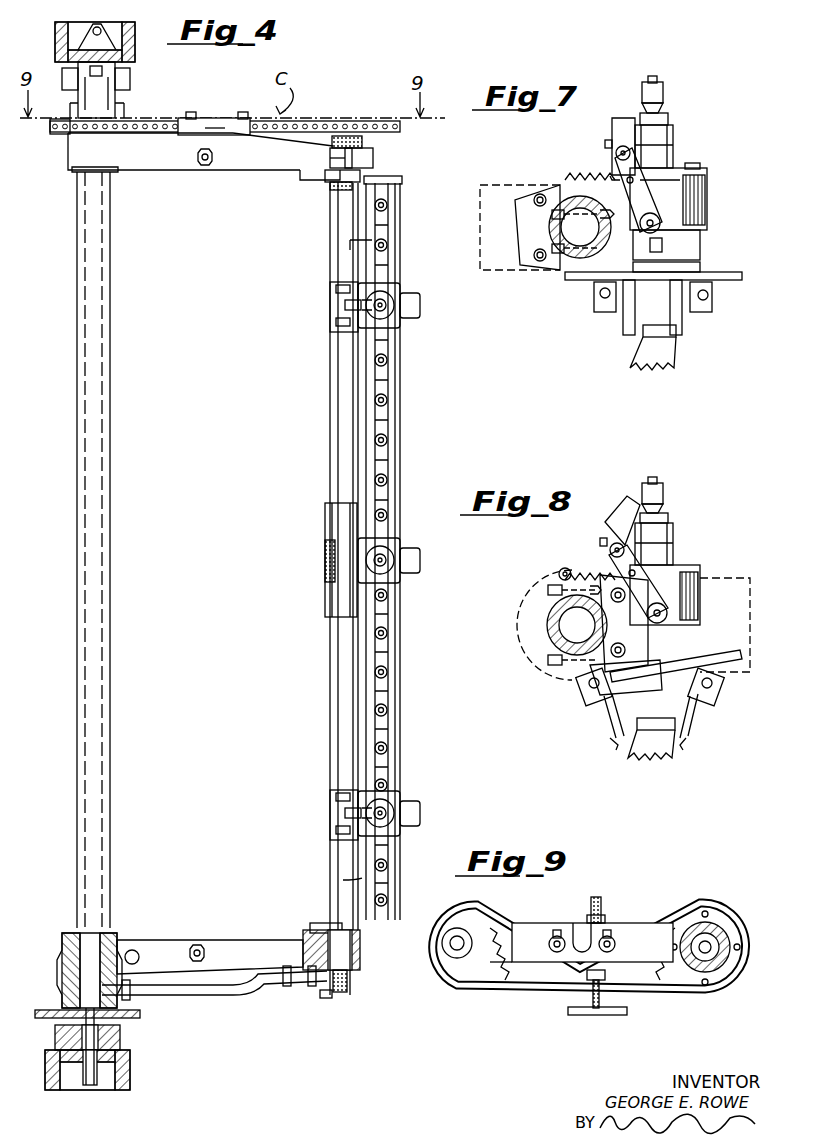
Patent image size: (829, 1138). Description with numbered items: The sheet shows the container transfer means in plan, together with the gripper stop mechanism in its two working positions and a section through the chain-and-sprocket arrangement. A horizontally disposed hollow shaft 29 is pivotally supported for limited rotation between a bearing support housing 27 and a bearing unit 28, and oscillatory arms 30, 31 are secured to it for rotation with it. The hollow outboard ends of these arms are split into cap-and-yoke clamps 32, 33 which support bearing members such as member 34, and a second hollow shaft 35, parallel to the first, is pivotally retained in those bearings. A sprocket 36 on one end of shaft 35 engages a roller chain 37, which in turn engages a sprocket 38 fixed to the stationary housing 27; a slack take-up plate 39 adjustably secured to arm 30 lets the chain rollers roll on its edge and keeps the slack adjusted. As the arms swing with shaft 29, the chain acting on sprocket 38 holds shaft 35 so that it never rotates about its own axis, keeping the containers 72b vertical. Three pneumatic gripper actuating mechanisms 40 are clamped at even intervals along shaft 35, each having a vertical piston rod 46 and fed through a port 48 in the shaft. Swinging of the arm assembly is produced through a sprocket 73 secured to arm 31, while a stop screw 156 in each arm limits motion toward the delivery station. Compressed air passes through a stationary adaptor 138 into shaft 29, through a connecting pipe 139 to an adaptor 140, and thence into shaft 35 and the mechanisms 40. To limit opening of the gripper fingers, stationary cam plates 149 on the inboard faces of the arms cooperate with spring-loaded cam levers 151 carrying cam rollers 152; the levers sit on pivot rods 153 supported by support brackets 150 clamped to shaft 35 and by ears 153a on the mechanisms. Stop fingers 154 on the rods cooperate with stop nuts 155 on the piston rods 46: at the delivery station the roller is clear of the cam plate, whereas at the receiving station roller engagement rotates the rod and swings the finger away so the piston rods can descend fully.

In FIG. 4, the bearing support housing 27 is at (120, 100).
In FIG. 4, the bearing unit 28 is at (120, 1038).
In FIG. 4, the horizontally disposed shaft 29 is at (95, 891).
In FIG. 4, the oscillatory arm 30 is at (148, 172).
In FIG. 4, the oscillatory arm 31 is at (166, 930).
In FIG. 4, the cap-and-yoke clamp 32 is at (374, 160).
In FIG. 4, the cap-and-yoke clamp 33 is at (360, 958).
In FIG. 4, the bearing member 34 is at (355, 975).
In FIG. 4, the second hollow shaft 35 is at (340, 723).
In FIG. 7, the second hollow shaft 35 is at (572, 260).
In FIG. 8, the second hollow shaft 35 is at (560, 650).
In FIG. 4, the sprocket 36 is at (362, 138).
In FIG. 9, the sprocket 36 is at (455, 975).
In FIG. 4, the roller chain 37 is at (335, 112).
In FIG. 9, the roller chain 37 is at (670, 992).
In FIG. 4, the sprocket 38 is at (58, 126).
In FIG. 9, the sprocket 38 is at (716, 914).
In FIG. 4, the slack take-up plate 39 is at (220, 120).
In FIG. 9, the slack take-up plate 39 is at (614, 925).
In FIG. 4, the pneumatic gripper actuating mechanism 40 is at (400, 295).
In FIG. 7, the pneumatic gripper actuating mechanism 40 is at (675, 135).
In FIG. 8, the pneumatic gripper actuating mechanism 40 is at (675, 530).
In FIG. 7, the vertical piston rod 46 is at (655, 82).
In FIG. 8, the vertical piston rod 46 is at (655, 483).
In FIG. 4, the port 48 is at (350, 566).
In FIG. 4, the containers 72b is at (386, 670).
In FIG. 4, the sprocket 73 is at (132, 1016).
In FIG. 4, the stationary adaptor 138 is at (90, 1090).
In FIG. 4, the connecting pipe 139 is at (258, 993).
In FIG. 4, the adaptor 140 is at (338, 995).
In FIG. 4, the stationary cam plate 149 is at (320, 182).
In FIG. 7, the stationary cam plate 149 is at (522, 258).
In FIG. 8, the stationary cam plate 149 is at (624, 623).
In FIG. 4, the support bracket 150 is at (330, 302).
In FIG. 7, the support bracket 150 is at (556, 216).
In FIG. 8, the support bracket 150 is at (545, 618).
In FIG. 7, the spring-loaded cam lever 151 is at (707, 195).
In FIG. 8, the spring-loaded cam lever 151 is at (700, 588).
In FIG. 7, the cam roller 152 is at (700, 232).
In FIG. 8, the cam roller 152 is at (690, 612).
In FIG. 4, the pivot rod 153 is at (350, 251).
In FIG. 7, the pivot rod 153 is at (672, 150).
In FIG. 8, the pivot rod 153 is at (670, 548).
In FIG. 4, the ears 153a is at (368, 308).
In FIG. 8, the ears 153a is at (630, 510).
In FIG. 7, the stop finger 154 is at (620, 126).
In FIG. 8, the stop finger 154 is at (608, 526).
In FIG. 7, the stop nut 155 is at (663, 95).
In FIG. 8, the stop nut 155 is at (663, 497).
In FIG. 4, the stop screw 156 is at (207, 165).
In FIG. 9, the stop screw 156 is at (600, 897).